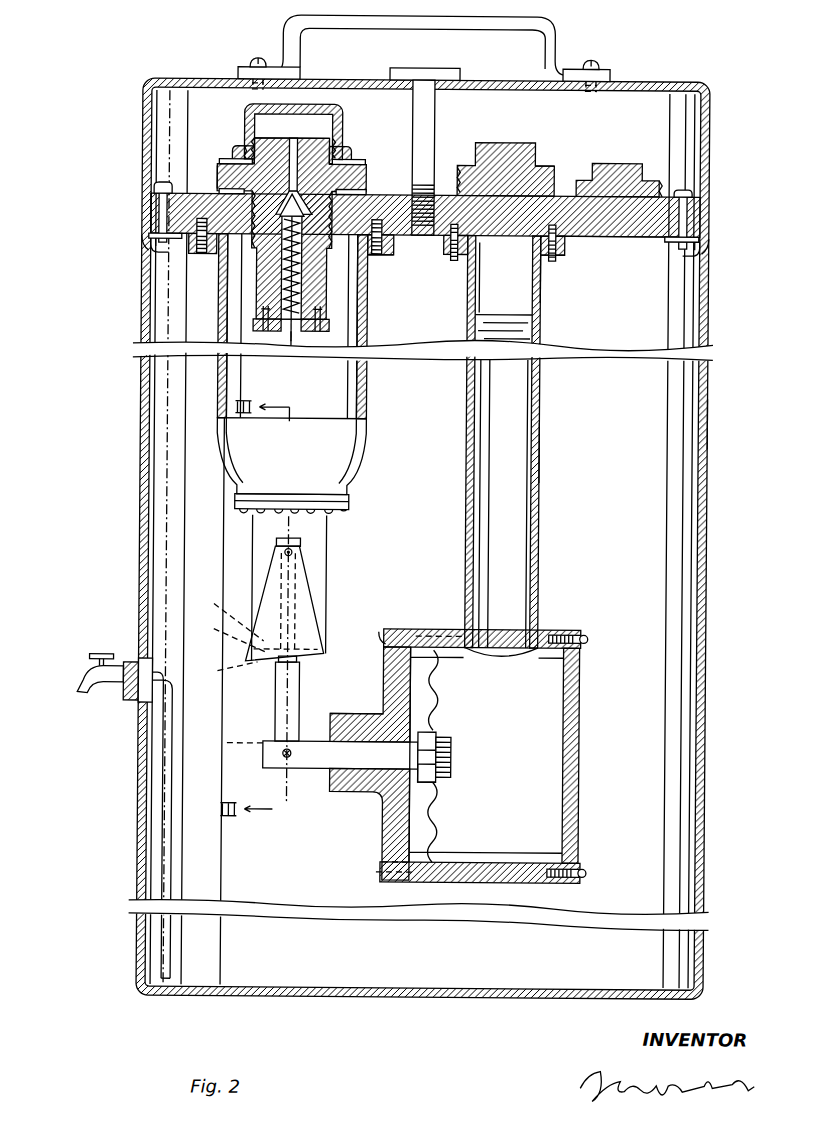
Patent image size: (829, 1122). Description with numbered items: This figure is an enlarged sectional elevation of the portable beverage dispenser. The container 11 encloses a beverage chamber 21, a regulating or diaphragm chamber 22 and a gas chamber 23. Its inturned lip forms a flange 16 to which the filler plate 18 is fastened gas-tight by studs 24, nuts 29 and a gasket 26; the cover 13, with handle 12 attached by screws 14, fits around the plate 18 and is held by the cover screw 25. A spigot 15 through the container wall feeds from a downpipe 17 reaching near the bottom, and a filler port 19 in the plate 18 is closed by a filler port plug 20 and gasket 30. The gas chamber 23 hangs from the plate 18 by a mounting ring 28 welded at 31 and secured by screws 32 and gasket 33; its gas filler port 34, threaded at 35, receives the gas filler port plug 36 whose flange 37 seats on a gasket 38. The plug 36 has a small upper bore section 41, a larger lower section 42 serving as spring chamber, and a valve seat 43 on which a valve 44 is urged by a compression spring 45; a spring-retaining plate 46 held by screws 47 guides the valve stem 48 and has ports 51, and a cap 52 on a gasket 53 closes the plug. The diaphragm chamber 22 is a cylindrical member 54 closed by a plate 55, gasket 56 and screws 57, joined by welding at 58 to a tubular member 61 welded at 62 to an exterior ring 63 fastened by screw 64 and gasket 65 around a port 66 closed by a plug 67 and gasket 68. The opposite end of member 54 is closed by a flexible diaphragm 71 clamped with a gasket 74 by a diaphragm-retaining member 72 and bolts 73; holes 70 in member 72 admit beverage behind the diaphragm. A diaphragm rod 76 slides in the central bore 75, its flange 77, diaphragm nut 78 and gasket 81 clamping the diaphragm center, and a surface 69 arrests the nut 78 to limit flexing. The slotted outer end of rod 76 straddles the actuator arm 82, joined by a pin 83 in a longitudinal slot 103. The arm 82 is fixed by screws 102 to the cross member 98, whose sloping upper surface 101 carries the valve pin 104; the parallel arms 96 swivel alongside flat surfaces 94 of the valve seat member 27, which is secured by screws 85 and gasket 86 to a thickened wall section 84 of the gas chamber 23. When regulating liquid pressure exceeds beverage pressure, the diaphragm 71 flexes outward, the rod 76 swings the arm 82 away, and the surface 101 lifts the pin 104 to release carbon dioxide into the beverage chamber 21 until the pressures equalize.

The container 11 is at (708, 422).
The handle 12 is at (566, 60).
The cover 13 is at (662, 81).
The screws 14 is at (599, 66).
The dispensing valve or spigot 15 is at (90, 668).
The circular horizontal flange 16 is at (152, 258).
The downpipe 17 is at (178, 858).
The filler plate 18 is at (156, 202).
The filler port 19 is at (626, 236).
The filler port plug 20 is at (612, 160).
The beverage chamber 21 is at (655, 470).
The regulating or diaphragm chamber 22 is at (525, 380).
The gas chamber 23 is at (230, 378).
The studs 24 is at (701, 212).
The cover bolt or screw 25 is at (437, 122).
The gasket 26 is at (146, 240).
The valve seat member 27 is at (322, 556).
The mounting ring 28 is at (352, 210).
The nuts 29 is at (690, 192).
The gasket 30 is at (660, 198).
The welding 31 is at (372, 258).
The screws 32 is at (376, 252).
The gasket 33 is at (384, 240).
The gas filler port 34 is at (358, 176).
The threaded lower section 35 is at (150, 214).
The gas filler port plug 36 is at (244, 150).
The encircling flange 37 is at (222, 168).
The gasket 38 is at (158, 190).
The upper section of bore 41 is at (268, 134).
The lower section of bore 42 is at (262, 290).
The valve seat 43 is at (332, 151).
The valve 44 is at (340, 170).
The compression spring 45 is at (286, 262).
The spring-retaining plate 46 is at (262, 322).
The screws 47 is at (218, 330).
The valve stem 48 is at (292, 348).
The ports 51 is at (306, 326).
The cap 52 is at (288, 101).
The gasket 53 is at (232, 165).
The cylindrical member 54 is at (520, 872).
The plate 55 is at (578, 792).
The gasket 56 is at (584, 878).
The screws 57 is at (582, 866).
The welding 58 is at (552, 630).
The elongated tubular member 61 is at (545, 458).
The welding 62 is at (545, 262).
The exterior ring 63 is at (566, 248).
The screw 64 is at (552, 256).
The gasket 65 is at (560, 240).
The diaphragm chamber port 66 is at (533, 172).
The plug 67 is at (506, 160).
The gasket 68 is at (458, 190).
The arresting surface 69 is at (381, 812).
The holes 70 is at (404, 627).
The flexible diaphragm 71 is at (440, 702).
The diaphragm-retaining member 72 is at (389, 662).
The bolts or screws 73 is at (384, 634).
The gasket 74 is at (430, 650).
The central bore 75 is at (366, 735).
The diaphragm rod 76 is at (332, 778).
The encircling flange 77 is at (444, 748).
The diaphragm nut 78 is at (438, 774).
The gasket 81 is at (446, 760).
The actuator arm 82 is at (282, 722).
The pin 83 is at (290, 756).
The thickened wall section 84 is at (362, 432).
The screws 85 is at (354, 512).
The gasket 86 is at (354, 498).
The flat surfaces 94 is at (280, 549).
The parallel arms 96 is at (320, 600).
The bottom cross member 98 is at (223, 670).
The sloping upper surface 101 is at (223, 634).
The screws 102 is at (284, 662).
The longitudinal slot 103 is at (302, 750).
The valve pin 104 is at (221, 616).